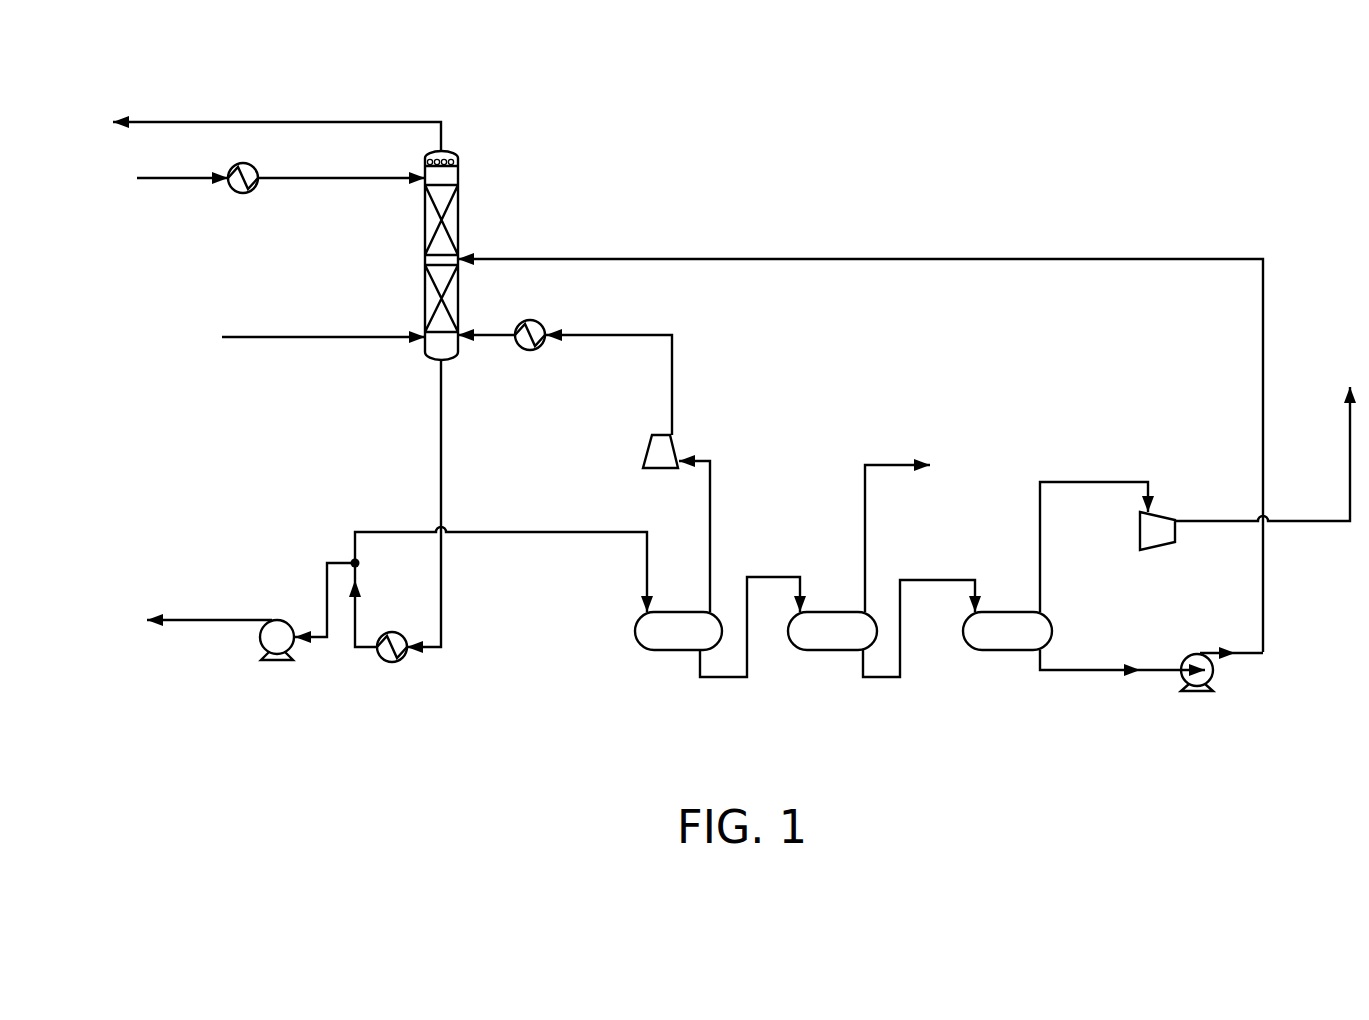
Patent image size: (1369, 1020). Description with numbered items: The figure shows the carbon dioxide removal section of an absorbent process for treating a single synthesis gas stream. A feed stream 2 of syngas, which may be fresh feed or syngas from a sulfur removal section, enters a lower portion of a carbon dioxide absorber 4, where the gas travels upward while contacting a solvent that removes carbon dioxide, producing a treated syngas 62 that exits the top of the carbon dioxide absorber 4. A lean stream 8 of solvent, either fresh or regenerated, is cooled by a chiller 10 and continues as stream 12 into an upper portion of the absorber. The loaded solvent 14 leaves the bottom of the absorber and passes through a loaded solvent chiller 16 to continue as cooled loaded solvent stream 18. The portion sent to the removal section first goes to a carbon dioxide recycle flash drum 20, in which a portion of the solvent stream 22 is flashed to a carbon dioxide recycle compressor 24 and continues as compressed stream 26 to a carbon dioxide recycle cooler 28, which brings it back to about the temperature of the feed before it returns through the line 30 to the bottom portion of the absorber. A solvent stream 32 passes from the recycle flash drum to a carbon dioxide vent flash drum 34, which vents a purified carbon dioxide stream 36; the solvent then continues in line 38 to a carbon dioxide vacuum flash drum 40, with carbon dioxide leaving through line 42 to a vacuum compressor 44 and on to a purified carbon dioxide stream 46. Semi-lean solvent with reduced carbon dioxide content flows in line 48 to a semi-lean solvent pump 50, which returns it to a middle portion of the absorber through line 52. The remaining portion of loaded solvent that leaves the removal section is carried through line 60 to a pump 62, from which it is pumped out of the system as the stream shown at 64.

The feed stream 2 is at (304, 334).
The carbon dioxide absorber 4 is at (460, 222).
The lean stream 8 is at (166, 176).
The chiller 10 is at (237, 164).
The stream 12 is at (348, 176).
The loaded solvent 14 is at (443, 445).
The loaded solvent chiller 16 is at (392, 665).
The cooled loaded solvent stream 18 is at (358, 615).
The carbon dioxide recycle flash drum 20 is at (669, 655).
The solvent stream 22 is at (712, 518).
The carbon dioxide recycle compressor 24 is at (645, 452).
The compressed stream 26 is at (674, 378).
The carbon dioxide recycle cooler 28 is at (538, 318).
The return stream 30 is at (494, 331).
The solvent stream 32 is at (723, 680).
The carbon dioxide vent flash drum 34 is at (833, 655).
The purified carbon dioxide stream 36 is at (864, 521).
The line 38 is at (940, 578).
The carbon dioxide vacuum flash drum 40 is at (1008, 655).
The line 42 is at (1041, 539).
The vacuum compressor 44 is at (1157, 549).
The purified carbon dioxide stream 46 is at (1232, 516).
The line 48 is at (1087, 673).
The semi-lean solvent pump 50 is at (1217, 674).
The line 52 is at (977, 256).
The line 60 is at (333, 562).
The treated syngas / pump 62 is at (278, 119).
The exiting stream 64 is at (197, 618).